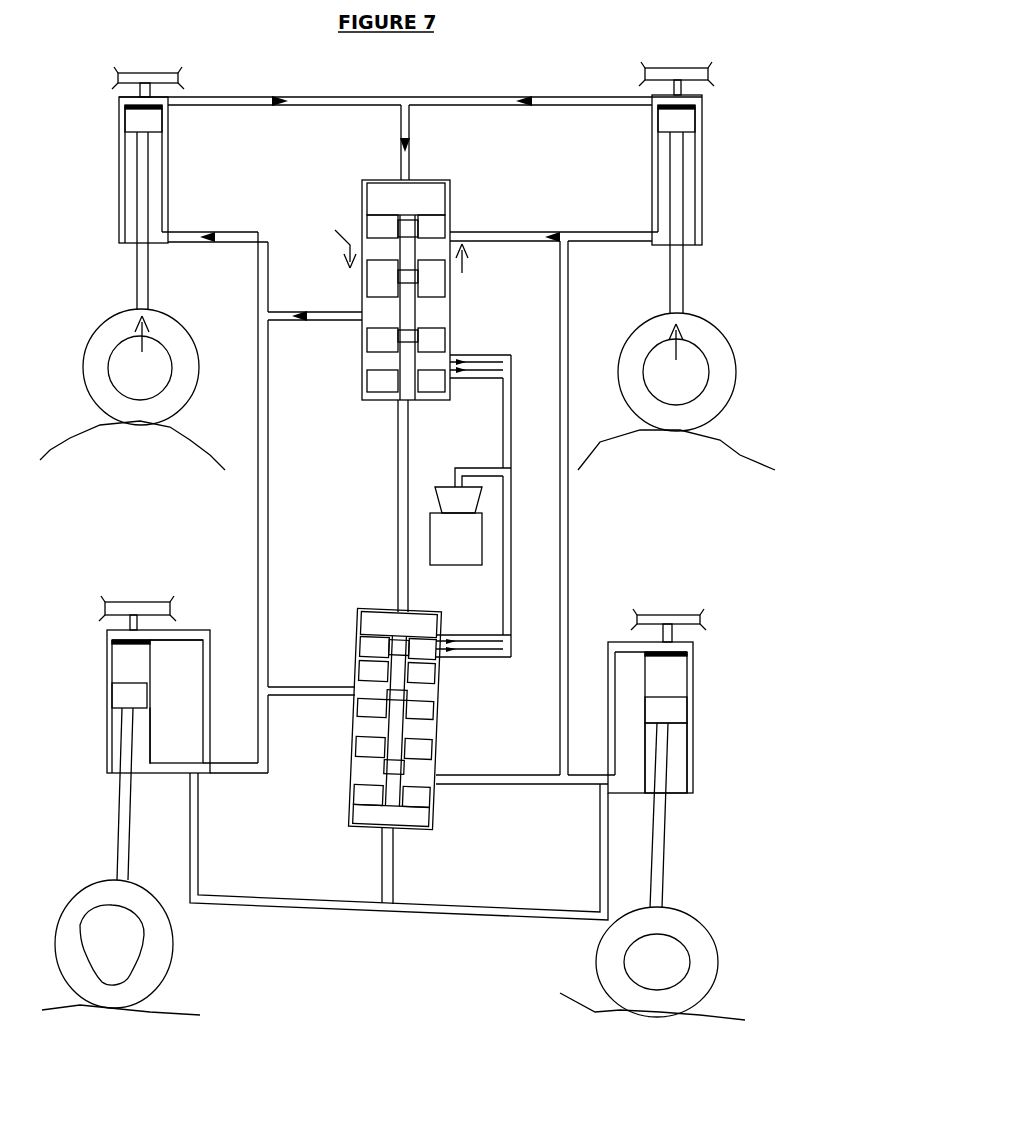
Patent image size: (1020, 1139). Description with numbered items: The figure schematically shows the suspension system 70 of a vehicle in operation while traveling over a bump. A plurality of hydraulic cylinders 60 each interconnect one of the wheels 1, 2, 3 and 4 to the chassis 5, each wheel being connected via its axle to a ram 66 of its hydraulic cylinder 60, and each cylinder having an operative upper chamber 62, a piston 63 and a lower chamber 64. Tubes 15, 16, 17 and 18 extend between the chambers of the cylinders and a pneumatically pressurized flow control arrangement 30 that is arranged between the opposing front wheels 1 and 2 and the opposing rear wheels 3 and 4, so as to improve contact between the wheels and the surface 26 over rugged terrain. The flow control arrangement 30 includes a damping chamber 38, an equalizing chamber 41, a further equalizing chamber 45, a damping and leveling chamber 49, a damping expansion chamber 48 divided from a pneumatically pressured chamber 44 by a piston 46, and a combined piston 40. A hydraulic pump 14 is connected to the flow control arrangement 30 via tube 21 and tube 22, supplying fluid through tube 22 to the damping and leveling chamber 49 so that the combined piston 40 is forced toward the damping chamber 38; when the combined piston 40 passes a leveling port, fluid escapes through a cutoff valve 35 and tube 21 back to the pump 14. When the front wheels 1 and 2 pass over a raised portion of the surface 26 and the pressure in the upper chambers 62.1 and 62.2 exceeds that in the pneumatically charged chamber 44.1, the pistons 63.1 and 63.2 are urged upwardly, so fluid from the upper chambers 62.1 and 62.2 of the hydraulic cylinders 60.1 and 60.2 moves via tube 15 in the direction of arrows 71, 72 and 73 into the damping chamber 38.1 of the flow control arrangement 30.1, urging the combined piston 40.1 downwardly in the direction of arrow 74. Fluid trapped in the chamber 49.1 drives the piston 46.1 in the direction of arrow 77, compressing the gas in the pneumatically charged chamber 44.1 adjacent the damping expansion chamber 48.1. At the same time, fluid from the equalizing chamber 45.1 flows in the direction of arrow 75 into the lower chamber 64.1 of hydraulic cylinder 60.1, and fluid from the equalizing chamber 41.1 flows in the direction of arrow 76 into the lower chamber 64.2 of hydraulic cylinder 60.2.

The suspension system 70 is at (414, 80).
The tube 15 is at (366, 96).
The arrow 71 is at (278, 96).
The arrow 72 is at (522, 96).
The arrow 73 is at (409, 129).
The arrow 74 is at (331, 241).
The arrow 75 is at (300, 309).
The arrow 76 is at (553, 238).
The arrow 77 is at (464, 268).
The chassis 5 is at (155, 78).
The hydraulic cylinder 60.1 is at (119, 157).
The hydraulic cylinder 60.2 is at (705, 148).
The hydraulic cylinder 60 is at (100, 723).
The upper chamber 62.1 is at (163, 112).
The upper chamber 62.2 is at (675, 103).
The upper chamber 62 is at (122, 665).
The piston 63.1 is at (146, 125).
The piston 63.2 is at (676, 126).
The piston 63 is at (125, 697).
The lower chamber 64.1 is at (157, 205).
The lower chamber 64.2 is at (665, 214).
The lower chamber 64 is at (113, 747).
The ram 66 is at (143, 265).
The wheel 1 is at (653, 328).
The wheel 2 is at (173, 335).
The wheel 3 is at (681, 930).
The wheel 4 is at (87, 892).
The surface 26 is at (200, 447).
The flow control arrangement 30.1 is at (358, 195).
The flow control arrangement 30 is at (347, 776).
The damping chamber 38.1 is at (428, 188).
The damping chamber 38 is at (403, 822).
The combined piston 40.1 is at (436, 227).
The combined piston 40 is at (417, 798).
The equalizing chamber 41.1 is at (452, 234).
The equalizing chamber 41 is at (420, 774).
The pneumatically charged chamber 44.1 is at (470, 254).
The pneumatically pressured chamber 44 is at (393, 740).
The equalizing chamber 45.1 is at (368, 325).
The equalizing chamber 45 is at (370, 702).
The piston 46.1 is at (412, 278).
The piston 46 is at (378, 687).
The damping expansion chamber 48.1 is at (407, 352).
The damping expansion chamber 48 is at (396, 655).
The damping chamber 49.1 is at (370, 392).
The damping and leveling chamber 49 is at (384, 622).
The cutoff valve 35 is at (470, 354).
The tube 21 is at (508, 417).
The tube 22 is at (401, 462).
The hydraulic pump 14 is at (447, 538).
The tube 16 is at (569, 521).
The tube 17 is at (402, 912).
The fluid conduit 18 is at (257, 521).